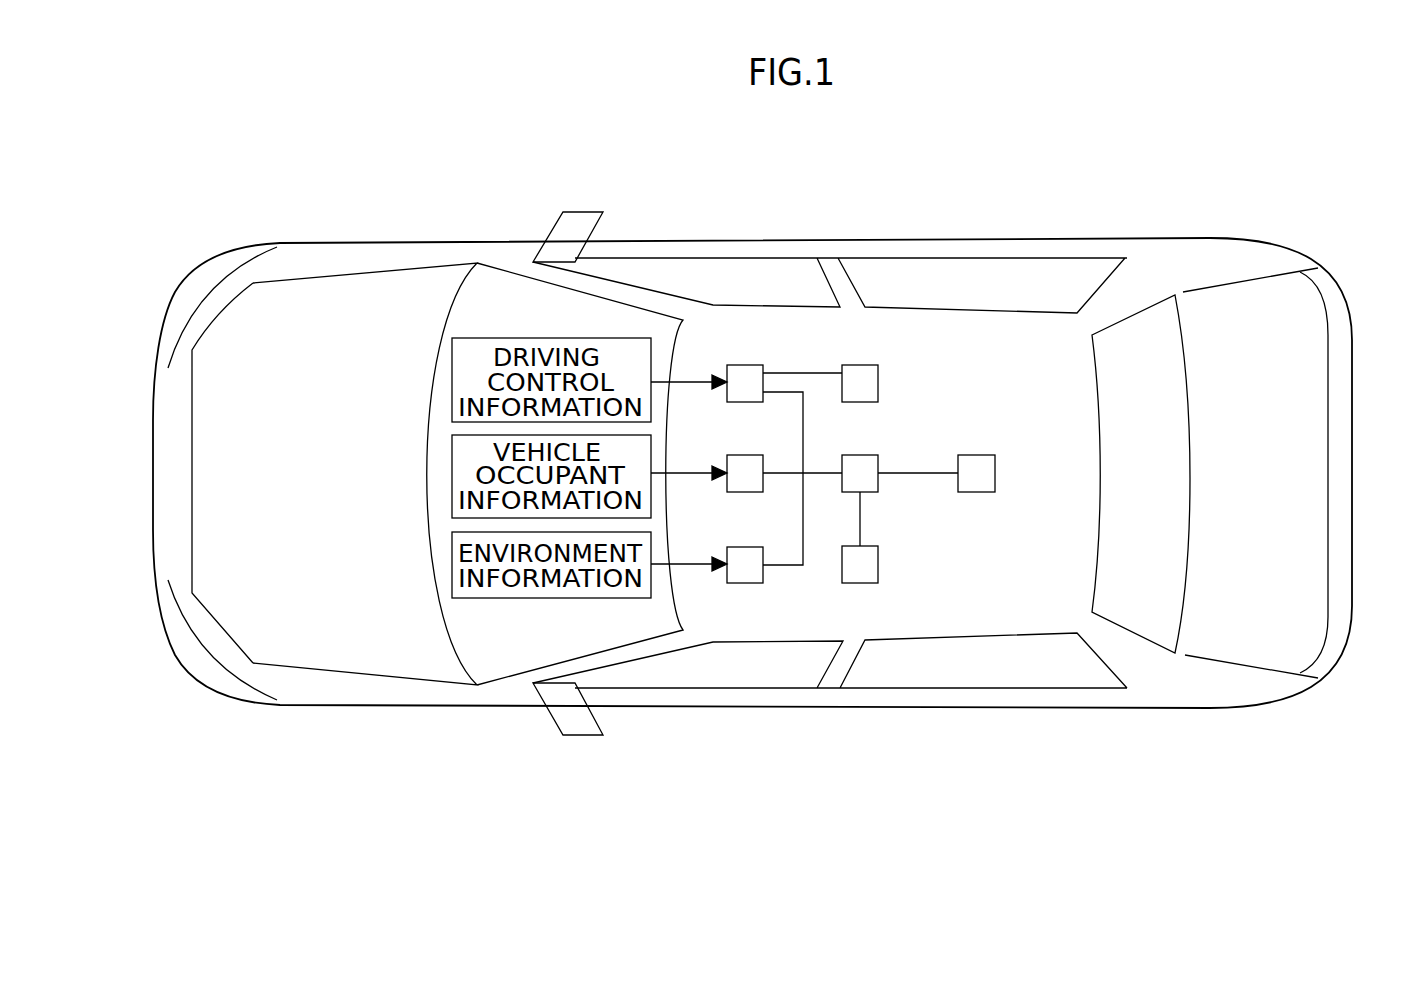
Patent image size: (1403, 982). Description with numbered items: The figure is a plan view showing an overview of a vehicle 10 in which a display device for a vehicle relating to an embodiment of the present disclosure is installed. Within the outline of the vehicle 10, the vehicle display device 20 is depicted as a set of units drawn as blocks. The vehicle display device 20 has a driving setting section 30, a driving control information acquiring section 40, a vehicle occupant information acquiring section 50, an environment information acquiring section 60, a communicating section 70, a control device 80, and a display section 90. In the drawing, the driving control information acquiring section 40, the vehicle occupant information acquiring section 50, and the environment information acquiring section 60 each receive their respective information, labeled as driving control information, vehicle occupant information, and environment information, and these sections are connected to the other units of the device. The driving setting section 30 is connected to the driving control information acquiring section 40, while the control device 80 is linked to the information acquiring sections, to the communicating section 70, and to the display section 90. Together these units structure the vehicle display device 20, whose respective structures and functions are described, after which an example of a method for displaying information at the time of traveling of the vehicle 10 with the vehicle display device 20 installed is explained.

The vehicle 10 is at (1270, 190).
The vehicle display device 20 is at (1000, 540).
The driving setting section 30 is at (878, 374).
The driving control information acquiring section 40 is at (748, 365).
The vehicle occupant information acquiring section 50 is at (755, 455).
The environment information acquiring section 60 is at (745, 583).
The communicating section 70 is at (878, 565).
The control device 80 is at (872, 455).
The display section 90 is at (982, 455).